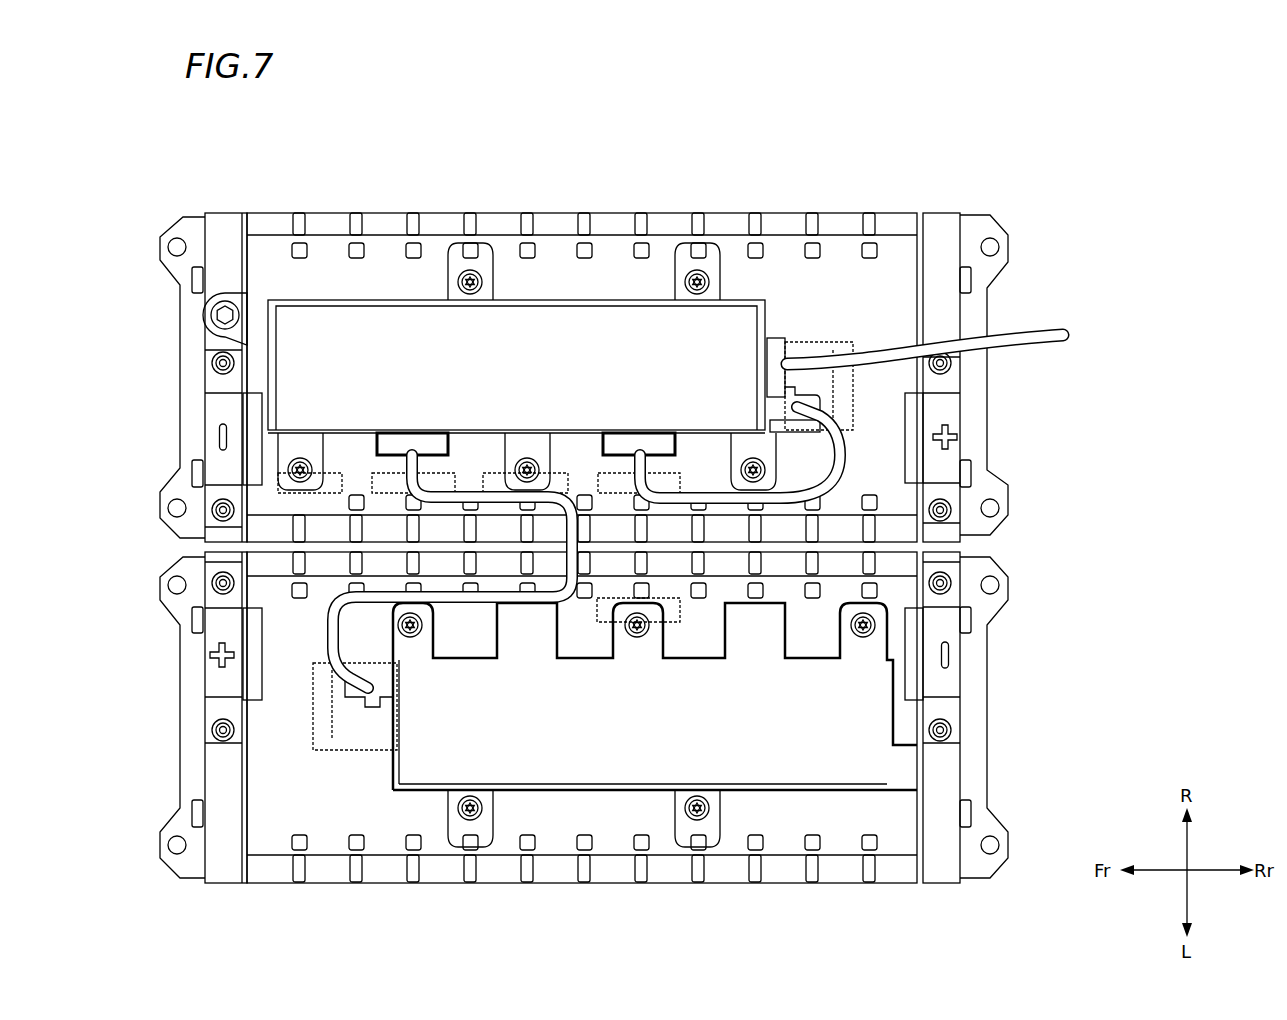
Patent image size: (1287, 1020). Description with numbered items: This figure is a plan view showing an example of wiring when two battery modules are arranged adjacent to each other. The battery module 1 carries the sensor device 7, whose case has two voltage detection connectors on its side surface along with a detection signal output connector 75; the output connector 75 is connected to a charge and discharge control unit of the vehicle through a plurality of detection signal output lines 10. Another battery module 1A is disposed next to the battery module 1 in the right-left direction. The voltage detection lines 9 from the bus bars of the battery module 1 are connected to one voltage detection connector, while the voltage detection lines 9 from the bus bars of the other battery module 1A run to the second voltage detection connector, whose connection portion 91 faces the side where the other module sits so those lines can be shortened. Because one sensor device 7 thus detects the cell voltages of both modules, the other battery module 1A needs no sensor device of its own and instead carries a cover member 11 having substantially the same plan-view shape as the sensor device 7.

The battery module 1 is at (908, 198).
The another battery module 1A is at (846, 898).
The sensor device 7 is at (375, 340).
The connector (74A, 74B) 91 is at (425, 445).
The detection signal output connector 75 is at (777, 345).
The voltage detection lines 9 is at (848, 455).
The detection signal output lines 10 is at (1035, 326).
The cover member 11 is at (630, 745).